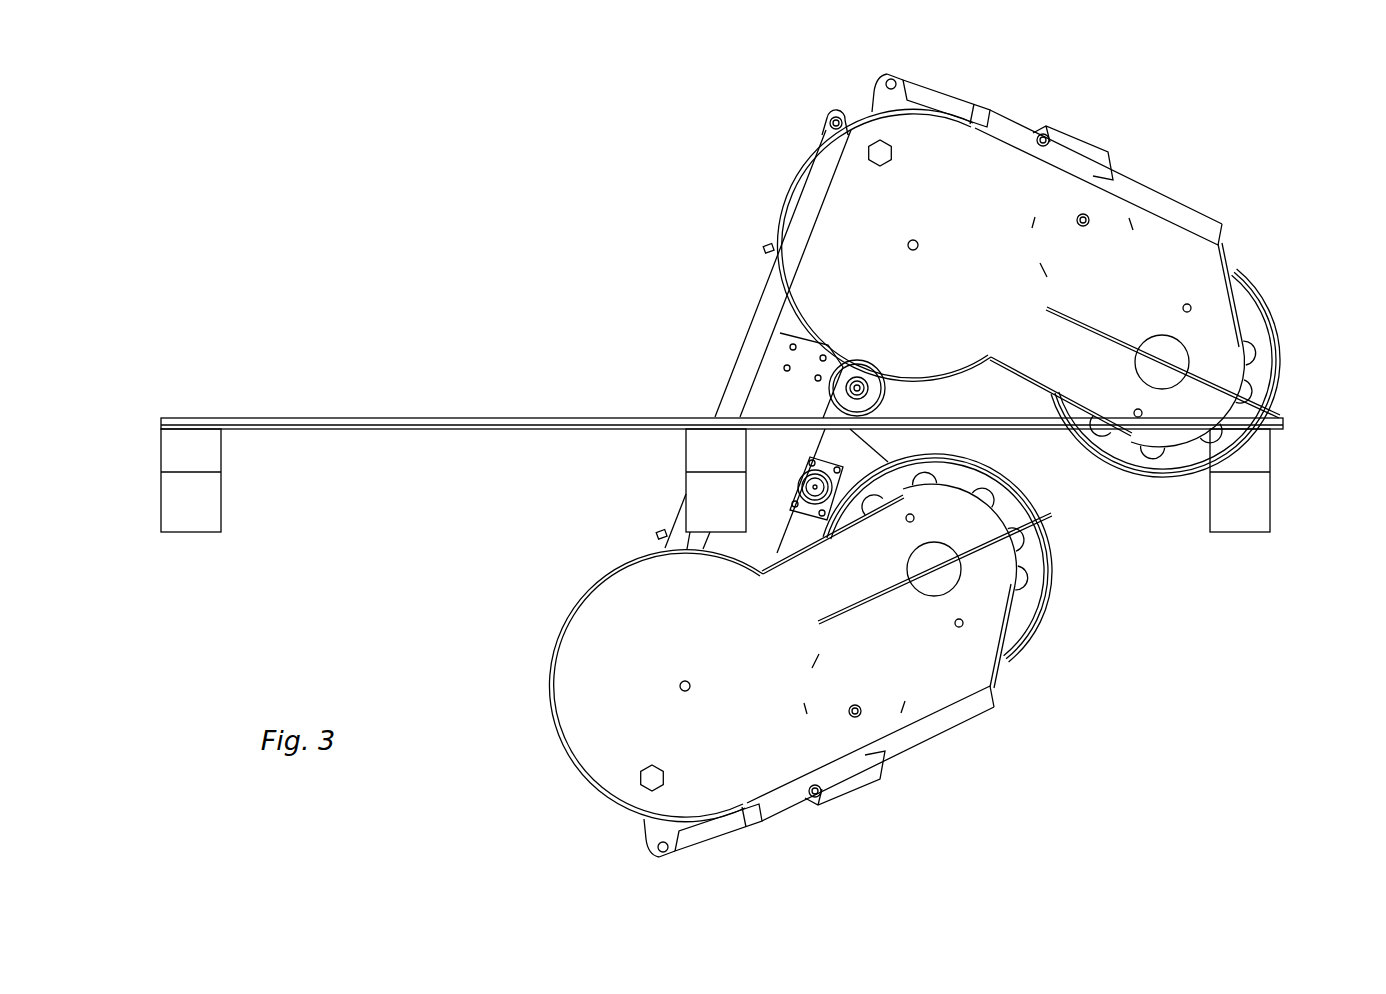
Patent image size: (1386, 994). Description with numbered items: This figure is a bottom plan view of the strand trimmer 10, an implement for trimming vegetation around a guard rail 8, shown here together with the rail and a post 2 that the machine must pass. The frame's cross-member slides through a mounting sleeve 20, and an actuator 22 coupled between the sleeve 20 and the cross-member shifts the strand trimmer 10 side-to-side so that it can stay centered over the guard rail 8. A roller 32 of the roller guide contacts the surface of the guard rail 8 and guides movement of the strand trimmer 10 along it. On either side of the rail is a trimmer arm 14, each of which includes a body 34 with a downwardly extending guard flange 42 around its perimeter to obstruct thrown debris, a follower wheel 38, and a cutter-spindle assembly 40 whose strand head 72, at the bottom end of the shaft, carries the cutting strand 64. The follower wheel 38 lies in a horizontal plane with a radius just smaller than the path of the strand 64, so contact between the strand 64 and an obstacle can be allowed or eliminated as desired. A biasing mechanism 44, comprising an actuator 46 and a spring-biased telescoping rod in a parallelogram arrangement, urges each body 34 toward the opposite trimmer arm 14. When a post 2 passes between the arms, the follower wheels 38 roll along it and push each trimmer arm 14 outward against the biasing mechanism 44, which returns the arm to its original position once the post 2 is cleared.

The post 2 is at (222, 513).
The guard rail 8 is at (190, 418).
The strand trimmer 10 is at (578, 175).
The trimmer arm 14 is at (1222, 250).
The mounting sleeve 20 is at (765, 390).
The actuator 22 is at (748, 327).
The roller 32 is at (887, 403).
The body 34 is at (867, 110).
The follower wheel 38 is at (1282, 349).
The cutter-spindle assembly 40 is at (1150, 297).
The guard flange 42 is at (1133, 193).
The biasing mechanism 44 is at (978, 80).
The actuator 46 is at (940, 93).
The strand 64 is at (1043, 307).
The strand head 72 is at (1135, 360).